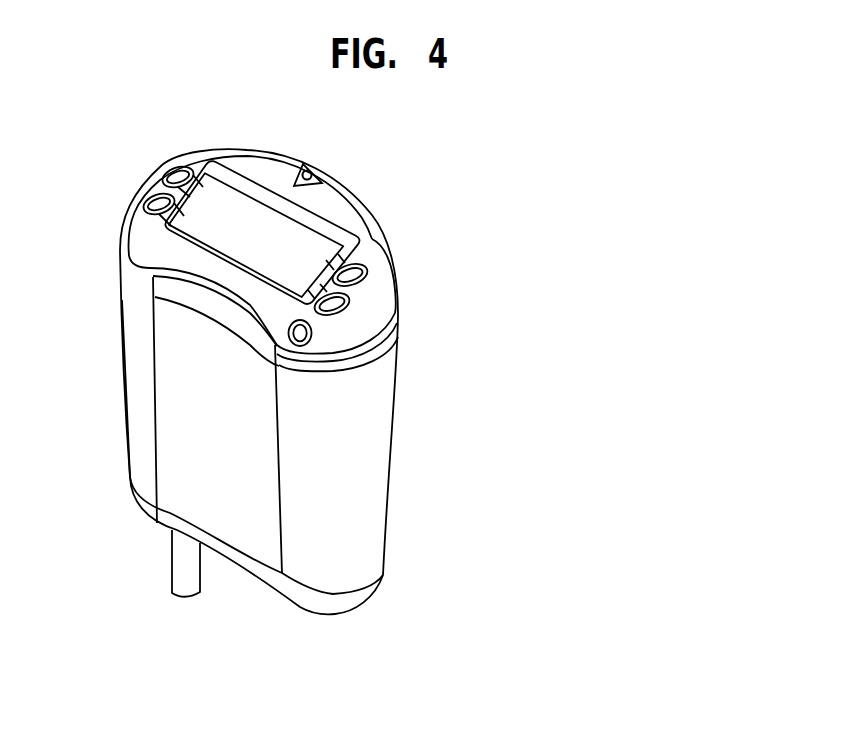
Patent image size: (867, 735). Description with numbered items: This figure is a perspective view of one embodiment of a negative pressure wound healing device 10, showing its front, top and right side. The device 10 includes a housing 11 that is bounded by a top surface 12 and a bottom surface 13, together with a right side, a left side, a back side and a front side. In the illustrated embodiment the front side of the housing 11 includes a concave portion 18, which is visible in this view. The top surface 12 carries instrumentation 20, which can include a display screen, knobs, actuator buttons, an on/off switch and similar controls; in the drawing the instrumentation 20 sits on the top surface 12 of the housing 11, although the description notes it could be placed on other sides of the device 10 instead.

The negative pressure wound healing device 10 is at (460, 317).
The housing 11 is at (388, 445).
The top surface 12 is at (330, 195).
The bottom surface 13 is at (345, 612).
The concave portion 18 is at (173, 392).
The instrumentation 20 is at (223, 183).